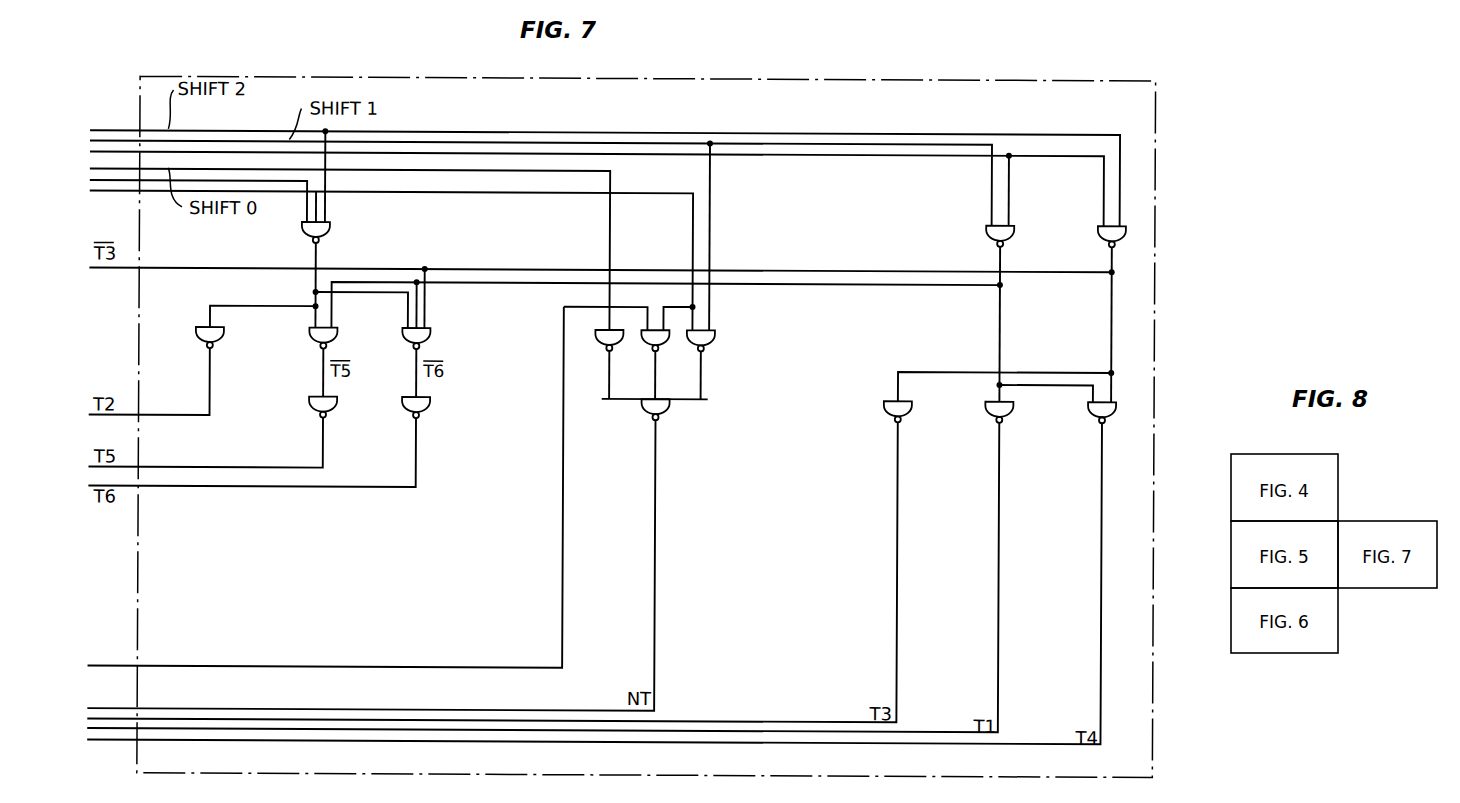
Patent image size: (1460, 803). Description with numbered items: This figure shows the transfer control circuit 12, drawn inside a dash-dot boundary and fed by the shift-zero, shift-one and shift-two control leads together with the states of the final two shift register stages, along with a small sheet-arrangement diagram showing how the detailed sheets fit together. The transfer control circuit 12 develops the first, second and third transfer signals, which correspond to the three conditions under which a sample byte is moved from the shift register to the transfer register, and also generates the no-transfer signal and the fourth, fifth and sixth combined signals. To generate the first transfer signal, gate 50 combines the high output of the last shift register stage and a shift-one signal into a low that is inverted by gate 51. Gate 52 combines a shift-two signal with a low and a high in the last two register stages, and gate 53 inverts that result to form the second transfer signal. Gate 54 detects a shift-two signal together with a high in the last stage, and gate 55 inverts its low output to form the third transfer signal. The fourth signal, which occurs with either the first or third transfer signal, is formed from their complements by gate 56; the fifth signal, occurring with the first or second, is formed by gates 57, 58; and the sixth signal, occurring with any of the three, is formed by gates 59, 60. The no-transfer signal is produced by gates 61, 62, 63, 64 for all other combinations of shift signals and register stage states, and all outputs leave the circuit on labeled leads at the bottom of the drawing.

The transfer control circuit 12 is at (1083, 100).
The gate 50 is at (987, 235).
The gate 51 is at (989, 412).
The gate 52 is at (329, 231).
The gate 53 is at (197, 335).
The gate 54 is at (1099, 235).
The gate 55 is at (884, 410).
The gate 56 is at (1089, 412).
The gate 57 is at (310, 335).
The gate 58 is at (311, 405).
The gate 59 is at (429, 337).
The gate 60 is at (429, 406).
The gate 61 is at (599, 340).
The gate 62 is at (663, 348).
The gate 63 is at (715, 340).
The gate 64 is at (666, 414).